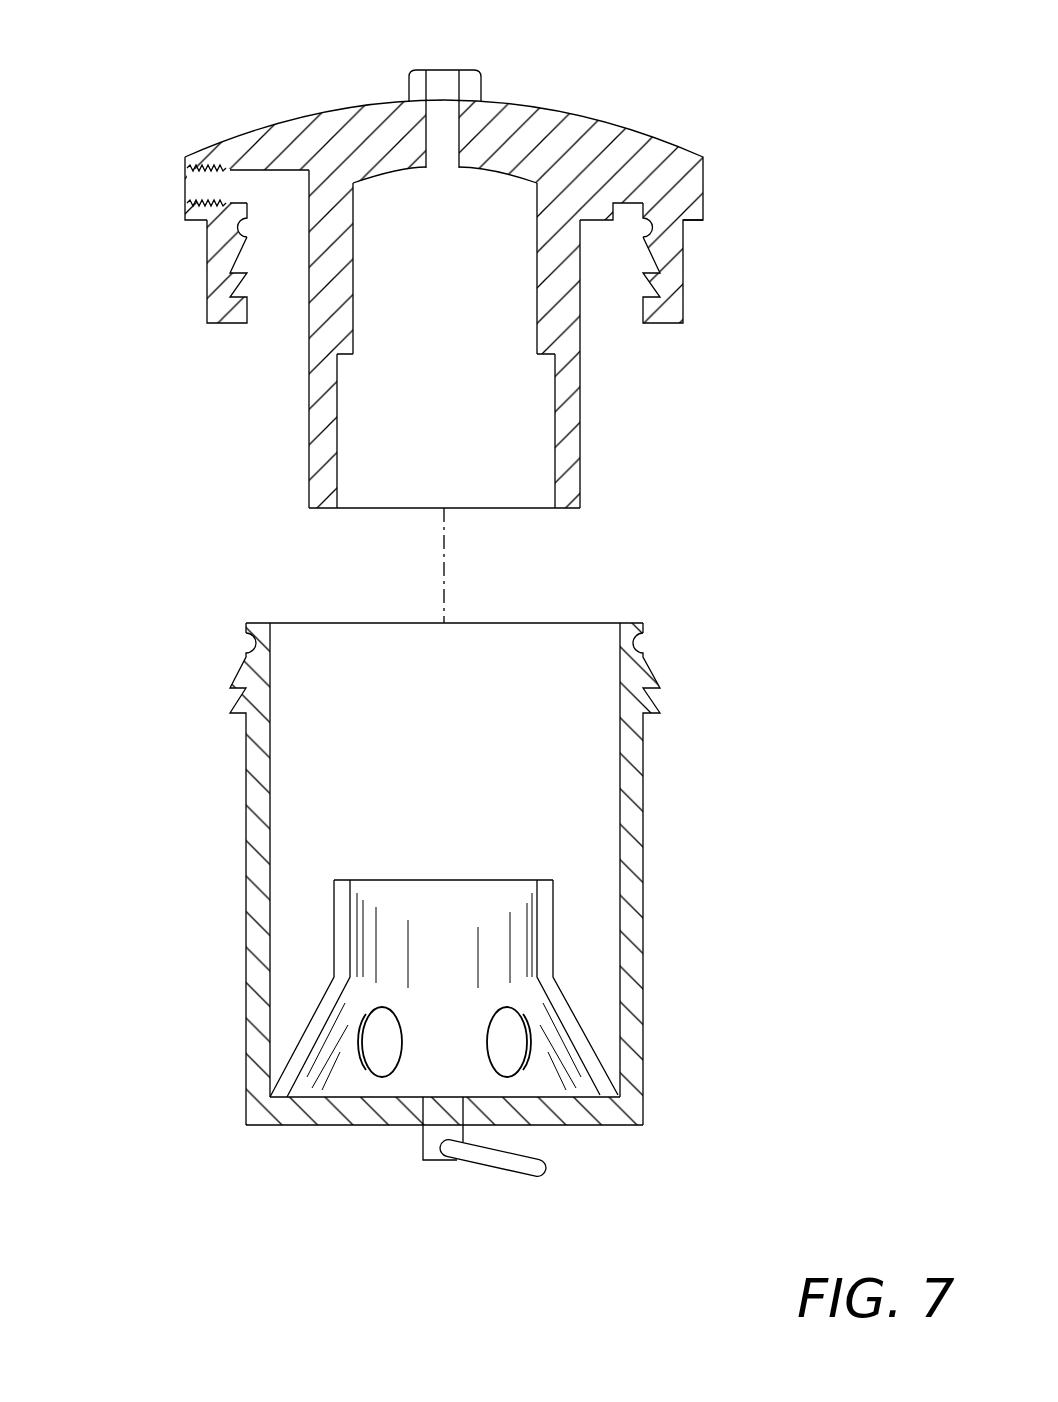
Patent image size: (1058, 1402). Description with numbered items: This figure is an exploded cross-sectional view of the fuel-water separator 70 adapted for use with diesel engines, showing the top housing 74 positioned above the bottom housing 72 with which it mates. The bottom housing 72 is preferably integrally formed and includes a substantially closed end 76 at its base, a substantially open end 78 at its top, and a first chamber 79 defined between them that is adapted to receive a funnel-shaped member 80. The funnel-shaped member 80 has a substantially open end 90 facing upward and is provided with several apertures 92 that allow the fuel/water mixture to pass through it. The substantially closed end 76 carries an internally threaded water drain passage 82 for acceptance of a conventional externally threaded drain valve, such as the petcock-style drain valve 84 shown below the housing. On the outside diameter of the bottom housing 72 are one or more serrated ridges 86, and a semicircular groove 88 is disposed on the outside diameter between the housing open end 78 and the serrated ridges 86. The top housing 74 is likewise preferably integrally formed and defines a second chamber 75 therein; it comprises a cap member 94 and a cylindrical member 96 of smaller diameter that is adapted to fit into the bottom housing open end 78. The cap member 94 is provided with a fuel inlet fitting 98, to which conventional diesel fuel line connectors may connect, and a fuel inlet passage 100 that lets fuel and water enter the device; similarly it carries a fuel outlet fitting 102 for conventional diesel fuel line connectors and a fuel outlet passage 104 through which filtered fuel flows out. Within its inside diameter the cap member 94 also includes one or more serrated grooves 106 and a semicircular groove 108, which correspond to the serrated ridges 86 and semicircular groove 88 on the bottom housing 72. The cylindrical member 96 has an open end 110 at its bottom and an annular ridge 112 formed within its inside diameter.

The sample container assembly 70 is at (228, 559).
The bottom housing 72 is at (693, 895).
The top housing 74 is at (749, 226).
The second chamber 75 is at (470, 311).
The substantially closed end 76 is at (570, 1120).
The substantially open end 78 is at (587, 623).
The first chamber 79 is at (500, 751).
The funnel-shaped member 80 is at (468, 1058).
The water drain passage 82 is at (421, 1122).
The petcock-style drain valve 84 is at (433, 1157).
The serrated ridges 86 is at (230, 713).
The semicircular groove 88 is at (643, 645).
The substantially open end 90 is at (388, 880).
The apertures 92 is at (507, 1038).
The cap member 94 is at (608, 130).
The cylindrical member 96 is at (570, 382).
The fuel inlet fitting 98 is at (187, 168).
The fuel inlet passage 100 is at (210, 187).
The fuel outlet fitting 102 is at (417, 83).
The fuel outlet passage 104 is at (447, 123).
The serrated grooves 106 is at (240, 268).
The semicircular groove 108 is at (283, 213).
The open end 110 is at (537, 508).
The annular ridge 112 is at (338, 356).